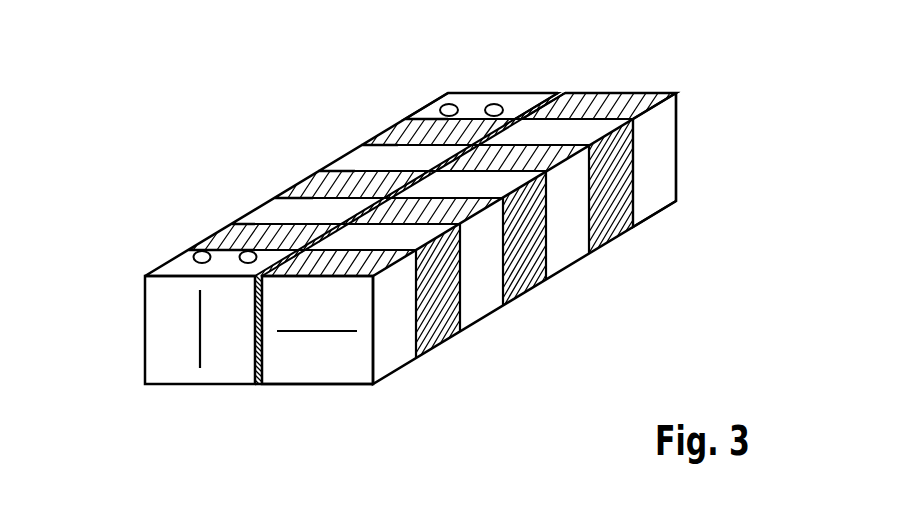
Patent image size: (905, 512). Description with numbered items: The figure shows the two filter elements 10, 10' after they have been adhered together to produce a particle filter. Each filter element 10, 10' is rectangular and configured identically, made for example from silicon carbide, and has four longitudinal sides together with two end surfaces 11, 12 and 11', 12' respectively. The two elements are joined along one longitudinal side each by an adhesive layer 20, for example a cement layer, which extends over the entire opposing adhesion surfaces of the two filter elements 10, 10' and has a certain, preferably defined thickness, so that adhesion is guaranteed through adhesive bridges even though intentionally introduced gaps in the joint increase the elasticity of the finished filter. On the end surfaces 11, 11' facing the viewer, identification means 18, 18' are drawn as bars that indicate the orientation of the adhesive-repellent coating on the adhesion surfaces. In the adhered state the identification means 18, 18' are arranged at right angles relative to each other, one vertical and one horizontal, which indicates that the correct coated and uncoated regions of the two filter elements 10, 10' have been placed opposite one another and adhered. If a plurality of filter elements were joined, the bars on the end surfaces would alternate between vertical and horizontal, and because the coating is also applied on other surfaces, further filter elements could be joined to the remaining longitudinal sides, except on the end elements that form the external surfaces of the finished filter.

The filter element 10 is at (389, 173).
The filter element 10' is at (465, 238).
The end surface 11 is at (179, 361).
The end surface 11' is at (302, 361).
The end surface 12 is at (489, 67).
The end surface 12' is at (626, 121).
The identification means 18 is at (140, 329).
The identification means 18' is at (327, 389).
The adhesive layer 20 is at (569, 86).